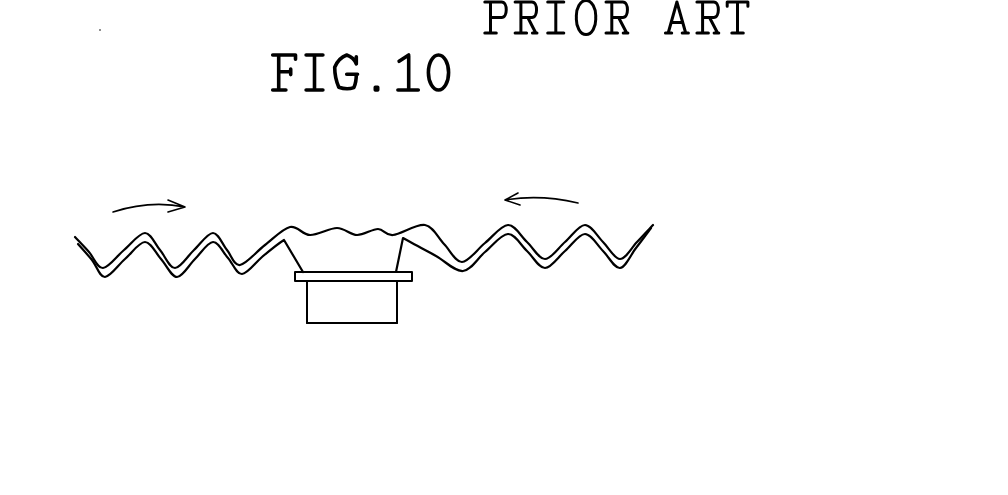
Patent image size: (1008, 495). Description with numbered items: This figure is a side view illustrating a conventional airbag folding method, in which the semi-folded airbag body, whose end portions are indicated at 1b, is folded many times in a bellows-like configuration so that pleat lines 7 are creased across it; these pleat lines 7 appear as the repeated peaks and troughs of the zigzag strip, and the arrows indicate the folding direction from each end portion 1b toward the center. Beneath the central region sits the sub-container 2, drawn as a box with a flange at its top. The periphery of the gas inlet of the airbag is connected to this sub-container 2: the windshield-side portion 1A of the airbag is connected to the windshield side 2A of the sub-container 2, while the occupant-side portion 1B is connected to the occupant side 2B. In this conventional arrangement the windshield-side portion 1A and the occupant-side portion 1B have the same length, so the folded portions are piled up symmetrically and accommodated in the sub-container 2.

The corrugated sheet (end portion) 1b is at (400, 255).
The pleat lines 7 is at (364, 263).
The windshield-side portion 1A is at (407, 252).
The occupant-side portion 1B is at (290, 255).
The sub-container 2 is at (350, 356).
The windshield side 2A is at (431, 305).
The occupant side 2B is at (307, 305).